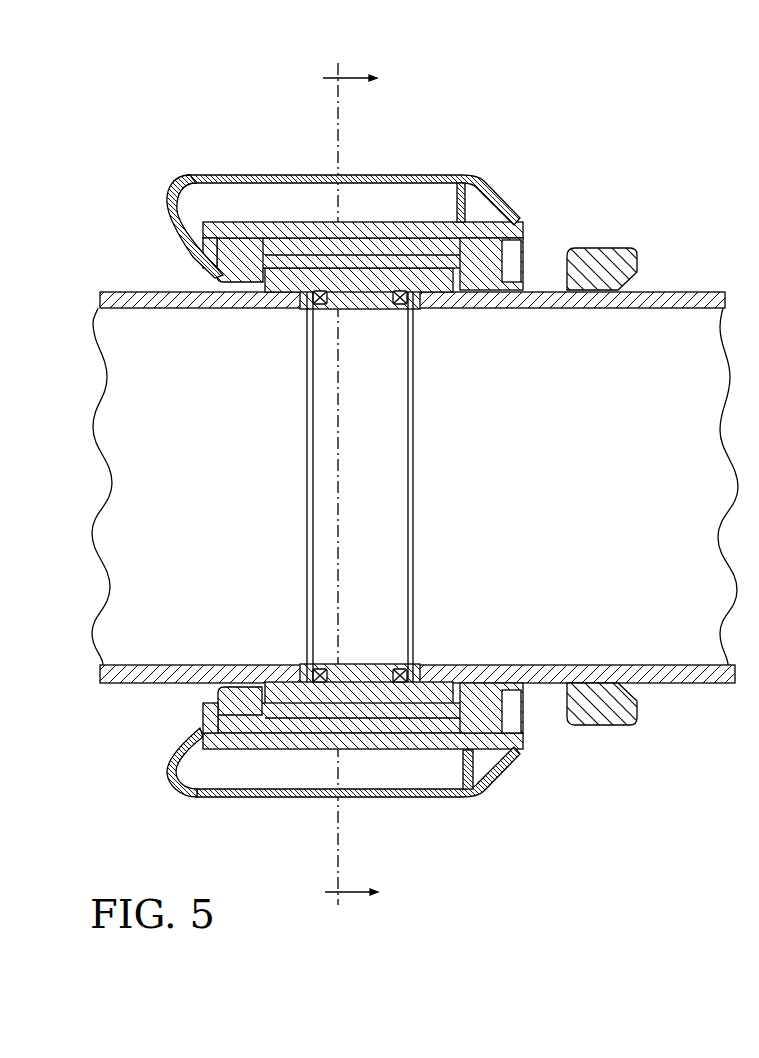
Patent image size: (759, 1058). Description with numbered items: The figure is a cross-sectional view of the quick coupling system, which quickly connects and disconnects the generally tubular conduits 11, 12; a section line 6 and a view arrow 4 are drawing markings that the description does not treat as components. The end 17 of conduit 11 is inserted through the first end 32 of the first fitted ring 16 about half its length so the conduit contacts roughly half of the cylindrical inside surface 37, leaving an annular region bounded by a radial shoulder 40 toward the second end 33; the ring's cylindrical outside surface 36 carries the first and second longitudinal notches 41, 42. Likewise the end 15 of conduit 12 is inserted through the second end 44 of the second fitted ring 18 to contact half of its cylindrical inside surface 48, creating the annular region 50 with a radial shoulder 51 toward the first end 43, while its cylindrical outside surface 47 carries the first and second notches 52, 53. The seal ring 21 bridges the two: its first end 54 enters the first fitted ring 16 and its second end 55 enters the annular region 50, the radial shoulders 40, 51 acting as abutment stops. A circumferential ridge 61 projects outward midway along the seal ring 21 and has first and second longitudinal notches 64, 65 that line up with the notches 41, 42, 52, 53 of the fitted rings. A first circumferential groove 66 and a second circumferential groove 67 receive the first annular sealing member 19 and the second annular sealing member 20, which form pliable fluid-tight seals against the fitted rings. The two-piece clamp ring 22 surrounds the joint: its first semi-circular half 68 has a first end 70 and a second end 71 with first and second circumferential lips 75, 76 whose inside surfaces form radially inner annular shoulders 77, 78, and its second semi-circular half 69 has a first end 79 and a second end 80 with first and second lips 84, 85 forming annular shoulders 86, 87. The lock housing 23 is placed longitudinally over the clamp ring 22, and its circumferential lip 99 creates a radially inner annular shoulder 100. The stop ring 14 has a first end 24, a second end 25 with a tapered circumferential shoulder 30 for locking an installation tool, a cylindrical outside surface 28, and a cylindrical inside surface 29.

The connector assembly 4 is at (381, 455).
The section line 6 is at (350, 487).
The conduit 11 is at (120, 683).
The conduit 12 is at (700, 683).
The stop ring 14 is at (602, 245).
The cylindrical outside surface 28 is at (602, 704).
The end 15 is at (414, 512).
The first fitted ring 16 is at (290, 282).
The end 17 is at (306, 505).
The second fitted ring 18 is at (417, 287).
The first annular sealing member 19 is at (320, 300).
The second annular sealing member 20 is at (412, 293).
The seal ring 21 is at (363, 297).
The two-piece clamp ring 22 is at (172, 765).
The lock housing 23 is at (193, 172).
The first end 24 is at (567, 288).
The second end 25 is at (640, 278).
The cylindrical inside surface 29 is at (594, 310).
The tapered circumferential shoulder 30 is at (643, 278).
The first end 32 is at (263, 291).
The second end 33 is at (327, 297).
The cylindrical outside surface 36 is at (232, 236).
The cylindrical inside surface 37 is at (321, 297).
The radial shoulder 40 is at (303, 298).
The first longitudinal notch 41 is at (335, 235).
The second longitudinal notch 42 is at (335, 780).
The first end 43 is at (380, 297).
The second end 44 is at (470, 290).
The cylindrical outside surface 47 is at (455, 190).
The cylindrical inside surface 48 is at (423, 660).
The annular region 50 is at (392, 510).
The radial shoulder 51 is at (422, 300).
The first notch 52 is at (385, 230).
The second notch 53 is at (375, 780).
The first end 54 is at (306, 447).
The second end 55 is at (414, 465).
The circumferential ridge 61 is at (350, 215).
The first longitudinal notch 64 is at (352, 180).
The second longitudinal notch 65 is at (337, 793).
The first circumferential groove 66 is at (272, 228).
The second circumferential groove 67 is at (425, 225).
The first semi-circular half 68 is at (510, 221).
The second semi-circular half 69 is at (478, 800).
The first end 70 is at (210, 277).
The second end 71 is at (508, 262).
The first circumferential lip 75 is at (230, 290).
The second circumferential lip 76 is at (473, 290).
The radially inner annular shoulder 77 is at (240, 300).
The radially inner annular shoulder 78 is at (497, 193).
The first end 79 is at (200, 720).
The second end 80 is at (515, 690).
The first circumferential lip 84 is at (227, 683).
The second circumferential lip 85 is at (490, 690).
The radially inner annular shoulder 86 is at (187, 793).
The radially inner annular shoulder 87 is at (495, 800).
The circumferential lip 99 is at (170, 213).
The radially inner annular shoulder 100 is at (172, 175).